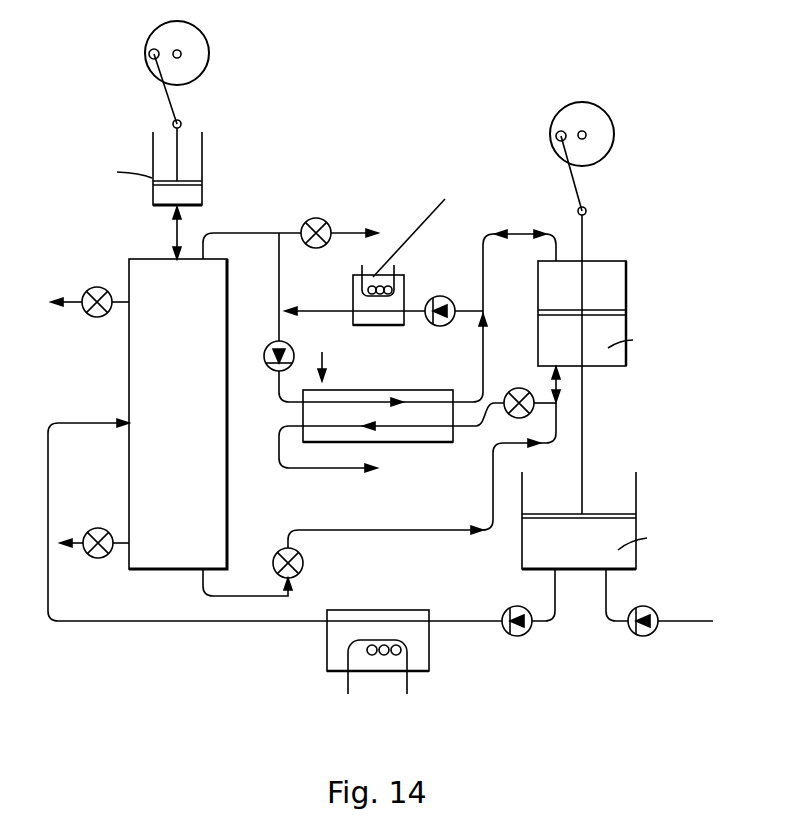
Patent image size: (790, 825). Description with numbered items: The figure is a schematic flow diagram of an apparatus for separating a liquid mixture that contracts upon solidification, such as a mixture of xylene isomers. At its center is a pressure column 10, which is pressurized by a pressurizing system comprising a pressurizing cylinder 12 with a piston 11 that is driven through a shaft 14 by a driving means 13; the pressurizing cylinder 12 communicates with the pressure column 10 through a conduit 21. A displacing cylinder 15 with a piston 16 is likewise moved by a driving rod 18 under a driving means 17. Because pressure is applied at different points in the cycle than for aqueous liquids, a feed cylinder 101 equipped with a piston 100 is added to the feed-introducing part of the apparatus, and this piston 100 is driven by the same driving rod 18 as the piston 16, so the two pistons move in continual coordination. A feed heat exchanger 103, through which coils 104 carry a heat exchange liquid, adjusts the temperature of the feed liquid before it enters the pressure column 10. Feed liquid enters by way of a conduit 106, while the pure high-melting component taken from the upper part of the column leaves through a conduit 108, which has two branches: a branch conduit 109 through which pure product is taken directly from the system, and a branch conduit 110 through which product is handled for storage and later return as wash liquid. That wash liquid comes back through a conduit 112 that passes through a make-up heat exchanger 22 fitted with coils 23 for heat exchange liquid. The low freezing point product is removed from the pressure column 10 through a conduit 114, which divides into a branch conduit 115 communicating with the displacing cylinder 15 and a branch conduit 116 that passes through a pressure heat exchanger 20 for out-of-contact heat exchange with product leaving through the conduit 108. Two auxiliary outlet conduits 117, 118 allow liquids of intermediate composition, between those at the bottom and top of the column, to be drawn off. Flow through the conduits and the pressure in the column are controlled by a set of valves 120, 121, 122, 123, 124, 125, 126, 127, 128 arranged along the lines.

The pressure column 10 is at (183, 445).
The piston 11 is at (181, 183).
The pressurizing cylinder 12 is at (195, 195).
The driving means 13 is at (193, 46).
The shaft 14 is at (174, 107).
The displacing cylinder 15 is at (591, 357).
The piston 16 is at (606, 312).
The driving means 17 is at (600, 123).
The driving rod 18 is at (584, 240).
The pressure heat exchanger 20 is at (430, 434).
The conduit 21 is at (173, 235).
The make-up heat exchanger 22 is at (362, 302).
The coils 23 is at (397, 276).
The piston 100 is at (585, 514).
The feed cylinder 101 is at (522, 553).
The feed heat exchanger 103 is at (327, 651).
The coils 104 is at (409, 688).
The conduit 106 is at (185, 623).
The conduit 108 is at (222, 233).
The branch conduit 109 is at (353, 238).
The branch conduit 110 is at (513, 234).
The conduit 112 is at (338, 312).
The conduit 114 is at (420, 531).
The branch conduit 115 is at (552, 385).
The branch conduit 116 is at (478, 430).
The auxiliary outlet conduit 117 is at (85, 537).
The auxiliary outlet conduit 118 is at (77, 306).
The valve 120 is at (643, 636).
The valve 121 is at (520, 636).
The valve 122 is at (300, 570).
The valve 123 is at (516, 417).
The valve 124 is at (303, 225).
The valve 125 is at (270, 365).
The valve 126 is at (455, 323).
The valve 127 is at (89, 553).
The valve 128 is at (103, 284).